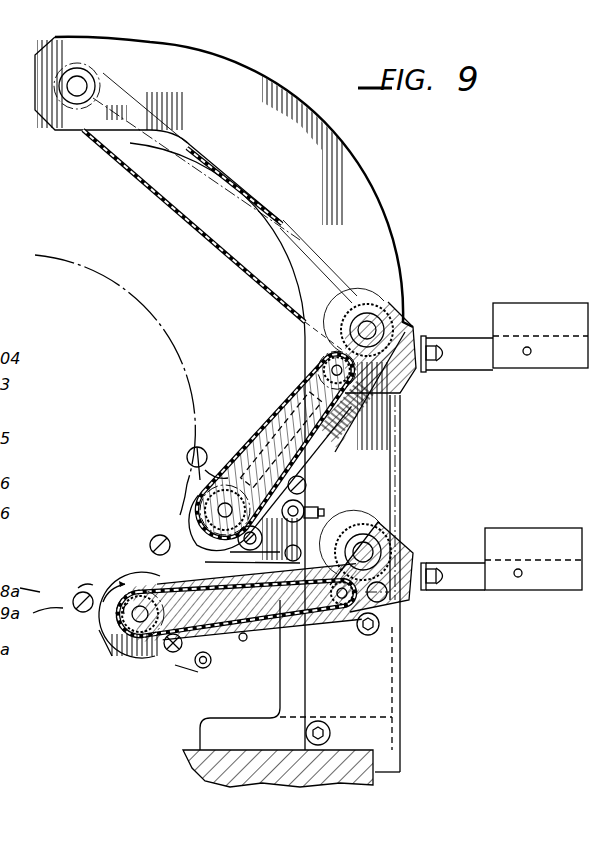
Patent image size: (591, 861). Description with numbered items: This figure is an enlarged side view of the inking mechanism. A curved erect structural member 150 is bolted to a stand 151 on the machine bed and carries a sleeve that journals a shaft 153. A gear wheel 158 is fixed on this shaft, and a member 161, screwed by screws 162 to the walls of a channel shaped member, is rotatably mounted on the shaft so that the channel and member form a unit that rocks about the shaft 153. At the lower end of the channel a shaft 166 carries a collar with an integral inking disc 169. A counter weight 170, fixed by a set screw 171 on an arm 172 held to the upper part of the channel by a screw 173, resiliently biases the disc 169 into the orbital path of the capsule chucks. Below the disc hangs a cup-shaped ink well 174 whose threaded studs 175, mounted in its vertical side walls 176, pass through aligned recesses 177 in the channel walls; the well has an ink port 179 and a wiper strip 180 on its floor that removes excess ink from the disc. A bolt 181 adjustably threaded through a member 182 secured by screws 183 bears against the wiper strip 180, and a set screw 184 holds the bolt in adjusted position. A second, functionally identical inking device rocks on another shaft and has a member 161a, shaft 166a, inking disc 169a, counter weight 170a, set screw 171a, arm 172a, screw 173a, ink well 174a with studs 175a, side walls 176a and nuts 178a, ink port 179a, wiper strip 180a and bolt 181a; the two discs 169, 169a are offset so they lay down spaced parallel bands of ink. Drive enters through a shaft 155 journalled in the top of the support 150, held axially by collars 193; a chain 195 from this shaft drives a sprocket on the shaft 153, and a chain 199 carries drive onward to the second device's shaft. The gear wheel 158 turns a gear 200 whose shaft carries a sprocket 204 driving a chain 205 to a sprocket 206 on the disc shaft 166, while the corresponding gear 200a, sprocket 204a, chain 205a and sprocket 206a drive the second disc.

The curved erect structural member 150 is at (338, 160).
The stand 151 is at (236, 718).
The shaft 153 is at (368, 321).
The shaft 155 is at (68, 88).
The gear wheel 158 is at (404, 302).
The member 161 is at (416, 325).
The member 161a is at (411, 538).
The screws 162 is at (347, 373).
The shaft 166 is at (217, 468).
The shaft 166a is at (127, 628).
The inking disc 169 is at (203, 478).
The inking disc 169a is at (145, 578).
The counter weight 170 is at (523, 312).
The counter weight 170a is at (540, 530).
The set screw 171 is at (526, 356).
The set screw 171a is at (518, 578).
The arm 172 is at (477, 370).
The arm 172a is at (470, 590).
The screw 173 is at (433, 346).
The screw 173a is at (433, 572).
The ink well 174 is at (164, 537).
The ink well 174a is at (100, 653).
The threaded studs 175 is at (228, 556).
The threaded studs 175a is at (165, 652).
The vertical side walls 176 is at (200, 541).
The vertical side walls 176a is at (110, 653).
The aligned recesses 177 is at (245, 551).
The nuts 178a is at (182, 668).
The ink port 179 is at (291, 562).
The ink port 179a is at (207, 665).
The wiper strip 180 is at (238, 500).
The wiper strip 180a is at (211, 660).
The bolt 181 is at (320, 517).
The bolt 181a is at (246, 640).
The member 182 is at (281, 440).
The screws 183 is at (303, 478).
The set screw 184 is at (303, 522).
The collars 193 is at (62, 80).
The chain 195 is at (170, 205).
The chain 199 is at (403, 451).
The gear 200 is at (308, 351).
The gear 200a is at (398, 621).
The sprocket 204 is at (323, 370).
The sprocket 204a is at (312, 622).
The chain 205 is at (288, 394).
The chain 205a is at (297, 630).
The sprocket 206 is at (190, 506).
The sprocket 206a is at (128, 617).